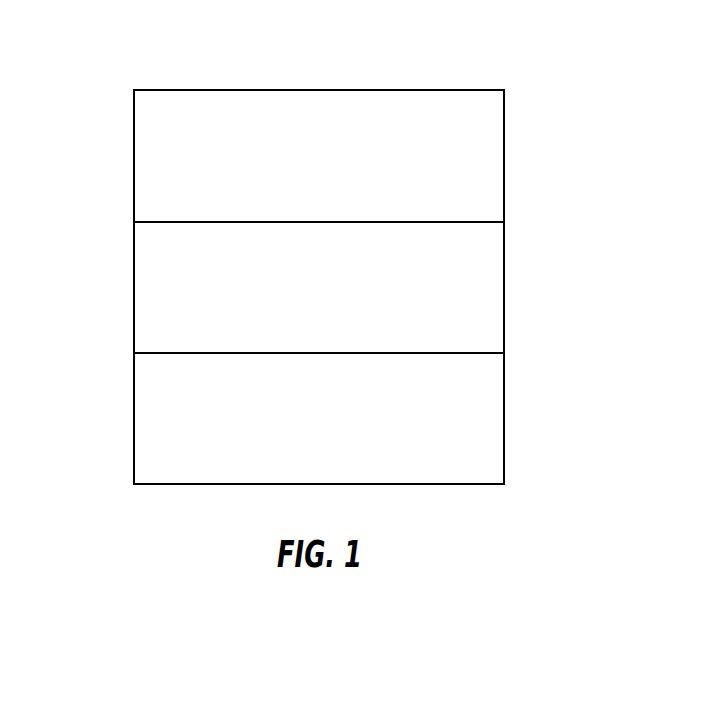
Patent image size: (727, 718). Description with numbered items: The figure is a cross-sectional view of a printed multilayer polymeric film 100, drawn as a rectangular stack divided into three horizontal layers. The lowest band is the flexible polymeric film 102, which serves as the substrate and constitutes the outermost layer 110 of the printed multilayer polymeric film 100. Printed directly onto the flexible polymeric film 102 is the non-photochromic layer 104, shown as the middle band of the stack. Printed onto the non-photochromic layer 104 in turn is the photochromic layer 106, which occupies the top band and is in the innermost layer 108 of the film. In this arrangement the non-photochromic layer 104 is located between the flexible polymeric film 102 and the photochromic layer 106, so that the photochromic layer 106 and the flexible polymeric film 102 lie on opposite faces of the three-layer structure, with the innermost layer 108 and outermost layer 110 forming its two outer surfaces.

The printed multilayer polymeric film 100 is at (145, 44).
The flexible polymeric film 102 is at (504, 420).
The non-photochromic layer 104 is at (504, 288).
The photochromic layer 106 is at (504, 155).
The innermost layer 108 is at (319, 156).
The outermost layer 110 is at (319, 418).